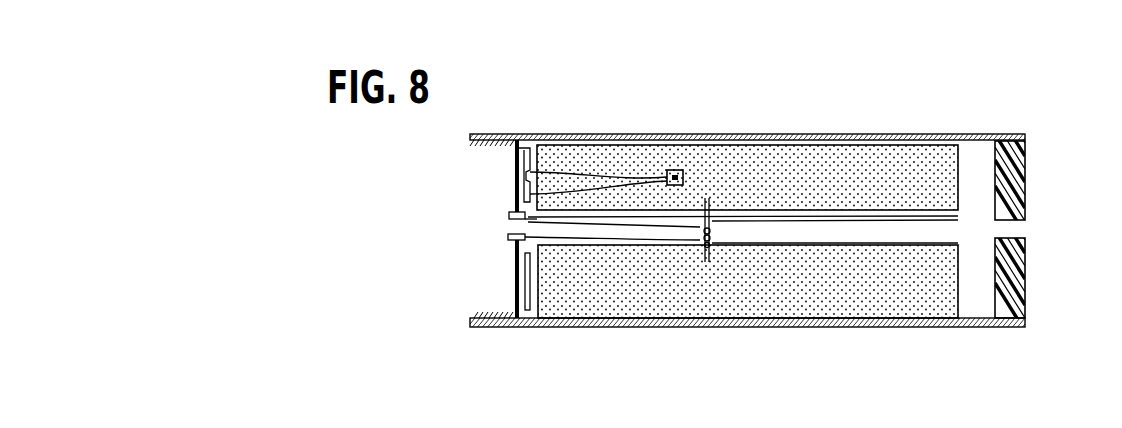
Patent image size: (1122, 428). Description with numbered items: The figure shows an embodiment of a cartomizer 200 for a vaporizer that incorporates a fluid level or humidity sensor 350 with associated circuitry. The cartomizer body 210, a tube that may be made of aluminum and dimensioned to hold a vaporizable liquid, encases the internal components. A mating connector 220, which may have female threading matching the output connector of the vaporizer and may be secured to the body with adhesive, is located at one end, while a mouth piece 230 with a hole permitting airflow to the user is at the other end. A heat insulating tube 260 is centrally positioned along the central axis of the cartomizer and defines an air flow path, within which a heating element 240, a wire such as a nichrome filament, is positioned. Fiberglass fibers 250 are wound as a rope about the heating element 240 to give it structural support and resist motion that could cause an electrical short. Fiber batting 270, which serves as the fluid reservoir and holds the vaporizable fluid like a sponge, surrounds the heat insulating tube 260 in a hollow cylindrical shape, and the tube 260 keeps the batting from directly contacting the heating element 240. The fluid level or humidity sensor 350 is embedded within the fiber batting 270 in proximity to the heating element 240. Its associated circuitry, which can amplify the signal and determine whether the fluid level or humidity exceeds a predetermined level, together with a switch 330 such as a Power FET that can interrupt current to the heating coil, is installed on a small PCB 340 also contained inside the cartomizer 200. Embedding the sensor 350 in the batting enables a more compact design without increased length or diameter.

The cartomizer 200 is at (611, 102).
The cartomizer body 210 is at (673, 140).
The mating connector 220 is at (490, 134).
The mouth piece 230 is at (1025, 180).
The heating element 240 is at (668, 248).
The fiberglass fibers 250 is at (707, 262).
The heat insulating tube 260 is at (905, 250).
The fiber batting 270 is at (753, 290).
The switch 330 is at (517, 162).
The PCB 340 is at (523, 270).
The fluid level or humidity sensor 350 is at (683, 172).